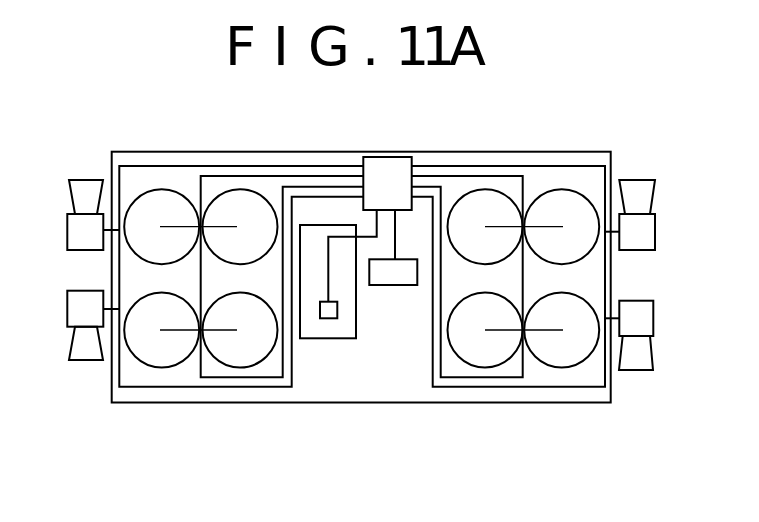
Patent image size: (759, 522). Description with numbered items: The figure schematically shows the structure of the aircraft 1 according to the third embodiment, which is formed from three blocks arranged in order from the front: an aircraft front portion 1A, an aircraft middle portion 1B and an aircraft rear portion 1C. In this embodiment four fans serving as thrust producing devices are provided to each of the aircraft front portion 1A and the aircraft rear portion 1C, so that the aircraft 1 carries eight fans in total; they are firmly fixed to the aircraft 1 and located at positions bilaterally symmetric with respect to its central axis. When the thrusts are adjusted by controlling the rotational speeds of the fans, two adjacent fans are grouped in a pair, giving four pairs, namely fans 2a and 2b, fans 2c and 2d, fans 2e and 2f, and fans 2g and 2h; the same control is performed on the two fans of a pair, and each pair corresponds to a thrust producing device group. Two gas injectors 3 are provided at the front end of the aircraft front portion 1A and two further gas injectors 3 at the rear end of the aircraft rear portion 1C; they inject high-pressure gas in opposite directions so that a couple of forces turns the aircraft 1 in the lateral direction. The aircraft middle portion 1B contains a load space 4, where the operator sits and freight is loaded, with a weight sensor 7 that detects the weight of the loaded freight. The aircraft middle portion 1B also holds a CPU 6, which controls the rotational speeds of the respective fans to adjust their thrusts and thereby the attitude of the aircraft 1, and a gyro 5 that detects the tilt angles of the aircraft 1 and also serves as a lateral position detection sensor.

The aircraft 1 is at (115, 413).
The aircraft front portion 1A is at (240, 292).
The aircraft middle portion 1B is at (364, 278).
The aircraft rear portion 1C is at (508, 292).
The fan 2a is at (160, 187).
The fan 2b is at (240, 187).
The fan 2c is at (160, 293).
The fan 2d is at (241, 292).
The fan 2e is at (485, 187).
The fan 2f is at (562, 187).
The fan 2g is at (462, 293).
The fan 2h is at (563, 292).
The gas injector 3 is at (655, 232).
The load space 4 is at (325, 338).
The gyro 5 is at (398, 285).
The CPU 6 is at (388, 157).
The weight sensor 7 is at (330, 318).